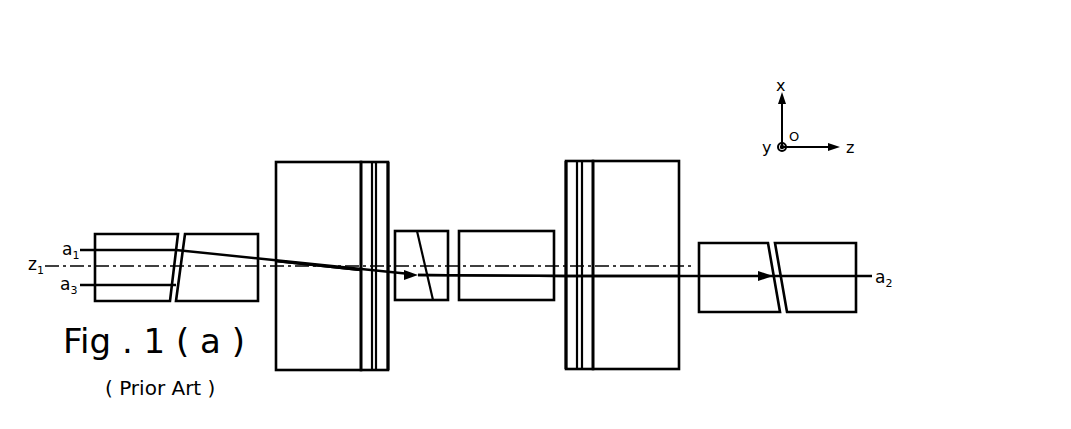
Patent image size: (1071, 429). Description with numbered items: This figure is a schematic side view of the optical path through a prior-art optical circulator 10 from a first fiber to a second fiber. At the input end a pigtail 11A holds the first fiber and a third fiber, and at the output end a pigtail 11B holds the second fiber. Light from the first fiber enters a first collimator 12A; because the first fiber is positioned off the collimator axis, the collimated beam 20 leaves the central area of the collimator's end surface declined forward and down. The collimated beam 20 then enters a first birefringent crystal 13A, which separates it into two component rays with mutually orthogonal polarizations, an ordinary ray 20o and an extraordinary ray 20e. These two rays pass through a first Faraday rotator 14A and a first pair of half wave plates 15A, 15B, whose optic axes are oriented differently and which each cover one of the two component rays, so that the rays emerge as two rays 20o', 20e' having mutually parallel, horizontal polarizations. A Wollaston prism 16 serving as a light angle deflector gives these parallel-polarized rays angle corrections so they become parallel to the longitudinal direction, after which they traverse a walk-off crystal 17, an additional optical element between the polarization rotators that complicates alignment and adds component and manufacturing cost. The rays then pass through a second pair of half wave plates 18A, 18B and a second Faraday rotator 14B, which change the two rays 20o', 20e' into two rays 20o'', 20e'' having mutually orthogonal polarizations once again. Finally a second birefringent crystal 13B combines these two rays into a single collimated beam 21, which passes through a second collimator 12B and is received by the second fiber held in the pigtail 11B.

The optical circulator 10 is at (105, 96).
The pigtail 11A is at (125, 234).
The pigtail 11B is at (802, 243).
The first collimator 12A is at (210, 234).
The second collimator 12B is at (733, 243).
The first birefringent crystal 13A is at (302, 162).
The second birefringent crystal 13B is at (645, 161).
The first Faraday rotator 14A is at (367, 162).
The second Faraday rotator 14B is at (585, 161).
The half wave plate 15A is at (388, 173).
The half wave plate 15B is at (388, 173).
The Wollaston prism 16 is at (432, 231).
The walk-off crystal 17 is at (482, 231).
The half wave plate 18A is at (566, 170).
The half wave plate 18B is at (566, 170).
The collimated beam 20 is at (272, 260).
The extraordinary ray 20e is at (318, 236).
The ordinary ray 20o is at (318, 236).
The ray having parallel polarization 20e' is at (480, 327).
The ray having parallel polarization 20o' is at (480, 327).
The ray having orthogonal polarization 20e'' is at (624, 344).
The ray having orthogonal polarization 20o'' is at (624, 344).
The collimated beam 21 is at (688, 280).